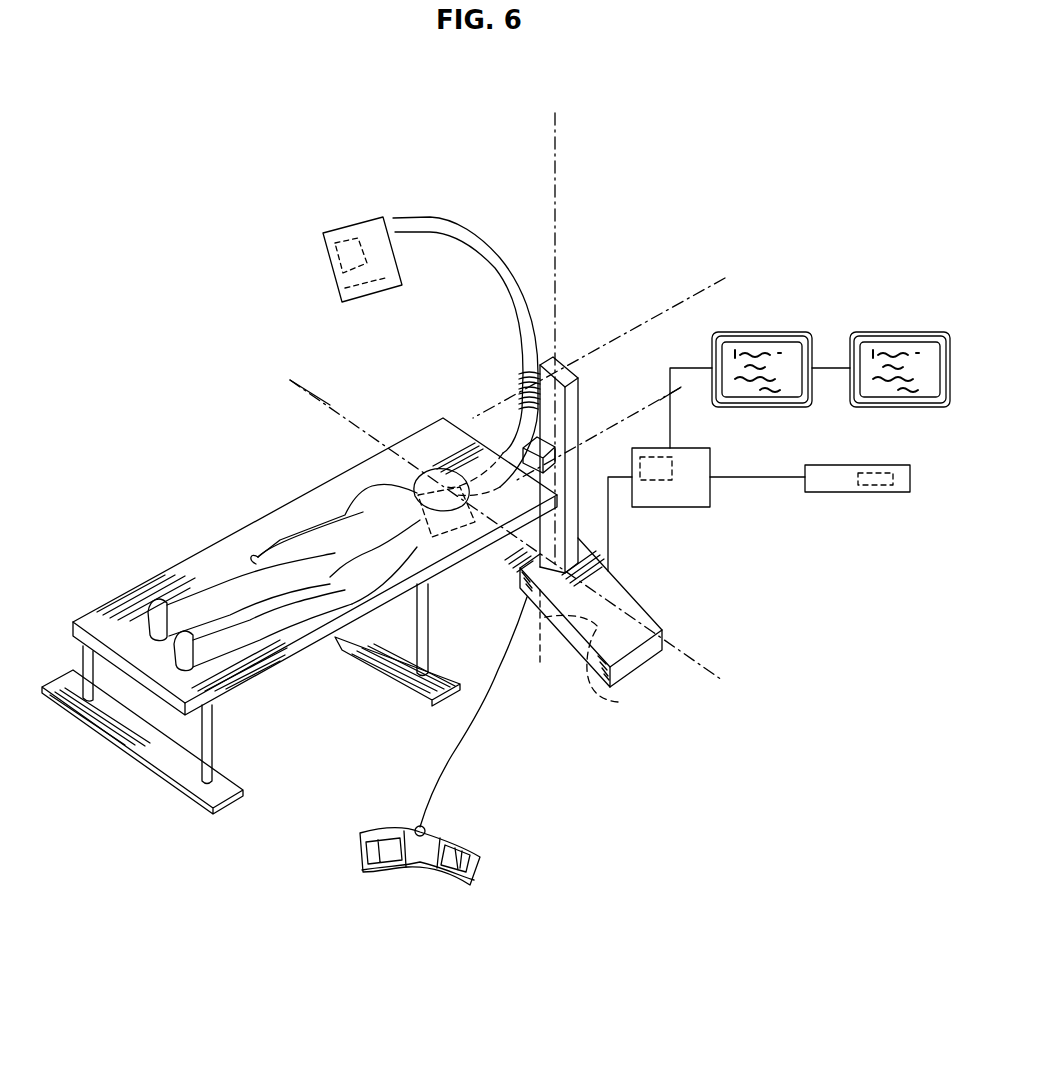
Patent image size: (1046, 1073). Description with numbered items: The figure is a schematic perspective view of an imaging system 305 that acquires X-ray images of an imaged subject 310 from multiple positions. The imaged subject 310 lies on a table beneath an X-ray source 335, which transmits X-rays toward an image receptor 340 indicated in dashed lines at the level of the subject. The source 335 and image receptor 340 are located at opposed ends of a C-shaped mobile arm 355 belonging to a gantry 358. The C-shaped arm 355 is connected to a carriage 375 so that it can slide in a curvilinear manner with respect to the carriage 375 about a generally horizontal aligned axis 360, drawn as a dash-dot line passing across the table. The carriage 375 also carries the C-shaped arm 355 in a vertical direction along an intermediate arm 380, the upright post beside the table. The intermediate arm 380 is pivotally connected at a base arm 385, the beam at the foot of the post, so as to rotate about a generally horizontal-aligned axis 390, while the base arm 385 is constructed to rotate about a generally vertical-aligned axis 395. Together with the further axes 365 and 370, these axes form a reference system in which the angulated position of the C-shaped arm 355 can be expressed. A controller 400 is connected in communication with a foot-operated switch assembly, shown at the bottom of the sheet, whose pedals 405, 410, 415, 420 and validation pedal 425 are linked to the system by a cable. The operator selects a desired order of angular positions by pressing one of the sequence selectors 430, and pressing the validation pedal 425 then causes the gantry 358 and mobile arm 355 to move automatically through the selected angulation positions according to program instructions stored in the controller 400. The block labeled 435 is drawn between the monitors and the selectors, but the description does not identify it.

The imaging system 305 is at (680, 165).
The imaged subject 310 is at (350, 525).
The X-ray source 335 is at (343, 240).
The image receptor 340 is at (450, 537).
The C-shaped mobile arm 355 is at (465, 231).
The gantry 358 is at (516, 170).
The horizontal aligned axis 360 is at (291, 381).
The axis 365 is at (703, 286).
The axis 370 is at (557, 135).
The carriage 375 is at (518, 382).
The intermediate arm 380 is at (584, 408).
The base arm 385 is at (563, 505).
The horizontal-aligned axis 390 is at (658, 389).
The vertical-aligned axis 395 is at (603, 671).
The controller 400 is at (429, 882).
The pedal 405 is at (362, 853).
The pedal 410 is at (398, 853).
The pedal 415 is at (438, 871).
The pedal 420 is at (467, 868).
The validation pedal 425 is at (415, 829).
The sequence selector 430 is at (892, 493).
The processor 435 is at (692, 509).